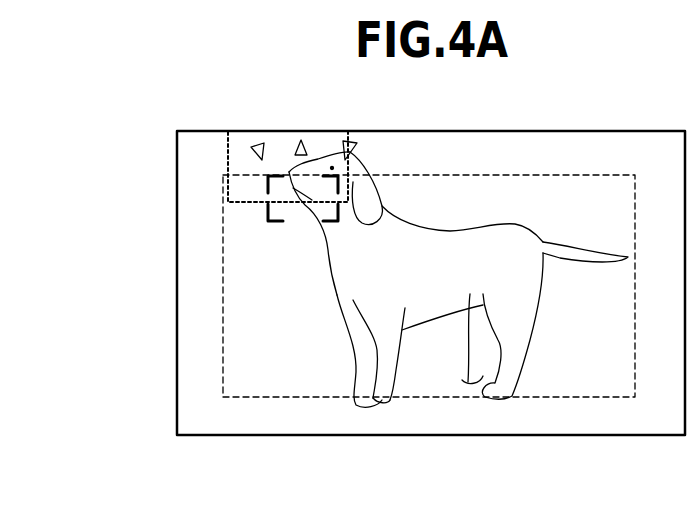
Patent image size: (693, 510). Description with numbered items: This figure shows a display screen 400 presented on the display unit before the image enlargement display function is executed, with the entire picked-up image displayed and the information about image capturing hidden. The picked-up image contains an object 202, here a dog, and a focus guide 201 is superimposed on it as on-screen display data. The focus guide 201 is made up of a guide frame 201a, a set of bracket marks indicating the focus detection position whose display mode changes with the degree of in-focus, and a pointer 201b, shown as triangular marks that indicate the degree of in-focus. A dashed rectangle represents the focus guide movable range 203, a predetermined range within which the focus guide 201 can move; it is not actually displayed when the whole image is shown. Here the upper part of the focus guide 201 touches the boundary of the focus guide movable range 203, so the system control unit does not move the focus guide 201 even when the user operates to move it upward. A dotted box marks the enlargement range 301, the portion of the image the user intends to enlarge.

The display screen 400 is at (514, 130).
The focus guide movable range 203 is at (612, 174).
The enlargement range 301 is at (228, 148).
The focus guide 201 is at (191, 198).
The guide frame 201a is at (268, 216).
The pointer 201b is at (237, 165).
The object 202 is at (342, 293).